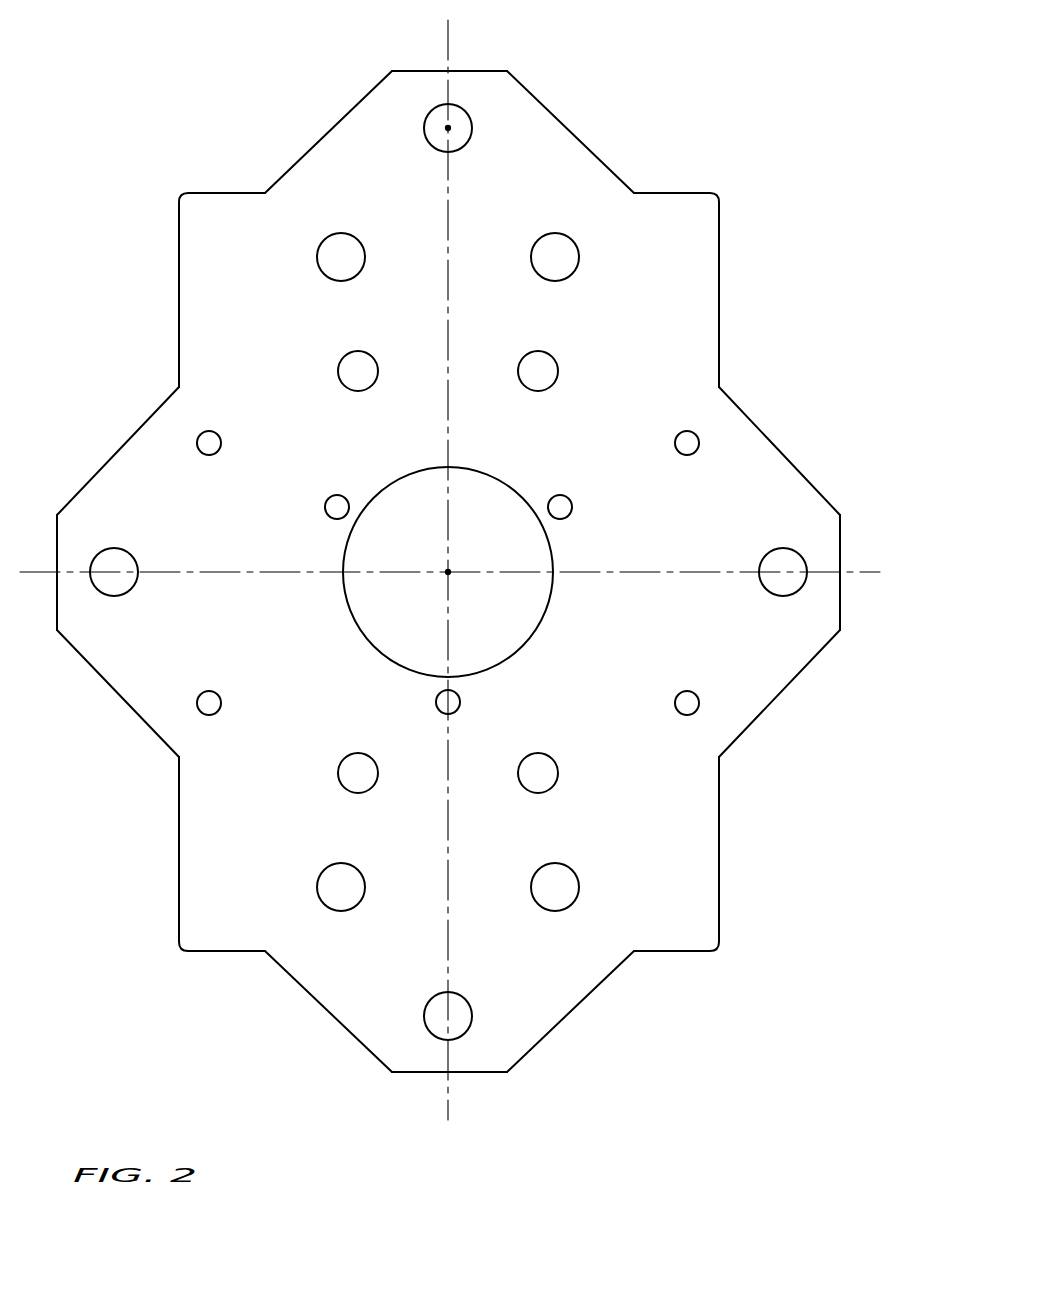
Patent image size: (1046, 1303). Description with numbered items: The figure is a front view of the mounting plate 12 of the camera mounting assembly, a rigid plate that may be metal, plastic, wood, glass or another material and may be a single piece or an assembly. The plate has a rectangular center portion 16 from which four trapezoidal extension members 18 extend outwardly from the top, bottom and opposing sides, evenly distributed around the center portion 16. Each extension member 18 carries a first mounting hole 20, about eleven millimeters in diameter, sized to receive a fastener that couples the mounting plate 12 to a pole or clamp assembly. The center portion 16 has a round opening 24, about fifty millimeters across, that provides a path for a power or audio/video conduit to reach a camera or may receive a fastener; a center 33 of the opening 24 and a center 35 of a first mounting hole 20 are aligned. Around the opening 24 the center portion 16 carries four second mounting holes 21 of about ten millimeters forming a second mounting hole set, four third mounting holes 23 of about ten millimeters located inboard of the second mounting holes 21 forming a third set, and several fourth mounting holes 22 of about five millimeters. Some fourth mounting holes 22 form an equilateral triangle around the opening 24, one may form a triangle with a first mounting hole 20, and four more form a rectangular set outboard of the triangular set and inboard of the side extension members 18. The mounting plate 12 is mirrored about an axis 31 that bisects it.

The mounting plate 12 is at (449, 558).
The center portion 16 is at (228, 882).
The extension member 18 is at (377, 127).
The first mounting hole 20 is at (440, 107).
The second mounting hole 21 is at (323, 237).
The fourth mounting hole 22 is at (331, 496).
The third mounting hole 23 is at (345, 357).
The opening 24 is at (385, 594).
The axis 31 is at (858, 574).
The center of the opening 33 is at (448, 572).
The center of the first mounting hole 35 is at (448, 128).